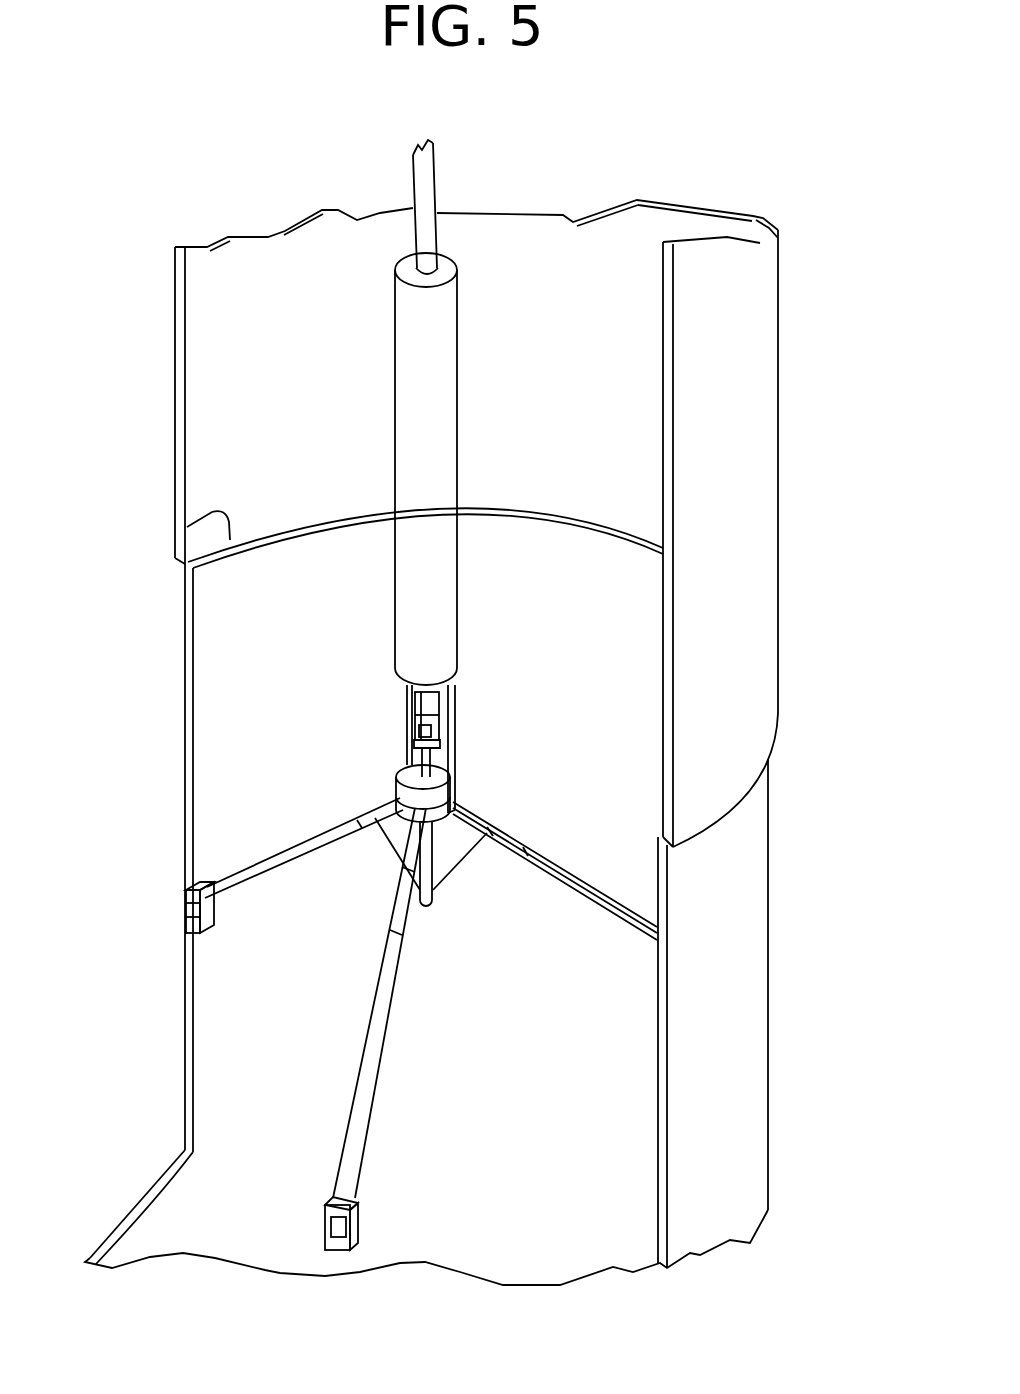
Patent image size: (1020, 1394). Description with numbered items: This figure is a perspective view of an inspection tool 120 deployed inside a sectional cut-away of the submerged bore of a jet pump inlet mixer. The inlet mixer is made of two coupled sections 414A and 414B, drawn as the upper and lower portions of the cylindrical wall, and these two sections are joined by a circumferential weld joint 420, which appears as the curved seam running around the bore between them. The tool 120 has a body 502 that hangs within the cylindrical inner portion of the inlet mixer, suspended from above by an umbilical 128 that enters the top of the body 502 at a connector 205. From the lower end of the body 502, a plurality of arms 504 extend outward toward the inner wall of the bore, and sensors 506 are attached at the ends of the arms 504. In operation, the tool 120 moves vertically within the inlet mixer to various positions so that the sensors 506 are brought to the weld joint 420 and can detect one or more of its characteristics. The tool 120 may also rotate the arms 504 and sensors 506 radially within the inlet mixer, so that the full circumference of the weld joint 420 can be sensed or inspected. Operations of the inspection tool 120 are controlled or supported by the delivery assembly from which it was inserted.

The tool 120 is at (358, 652).
The umbilical 128 is at (438, 177).
The cable connector 205 is at (448, 263).
The first section of jet pump inlet mixer 414A is at (780, 362).
The second section of jet pump inlet mixer 414B is at (770, 998).
The circumferential weld joint 420 is at (187, 523).
The body 502 is at (458, 386).
The arms 504 is at (397, 917).
The sensors 506 is at (185, 909).